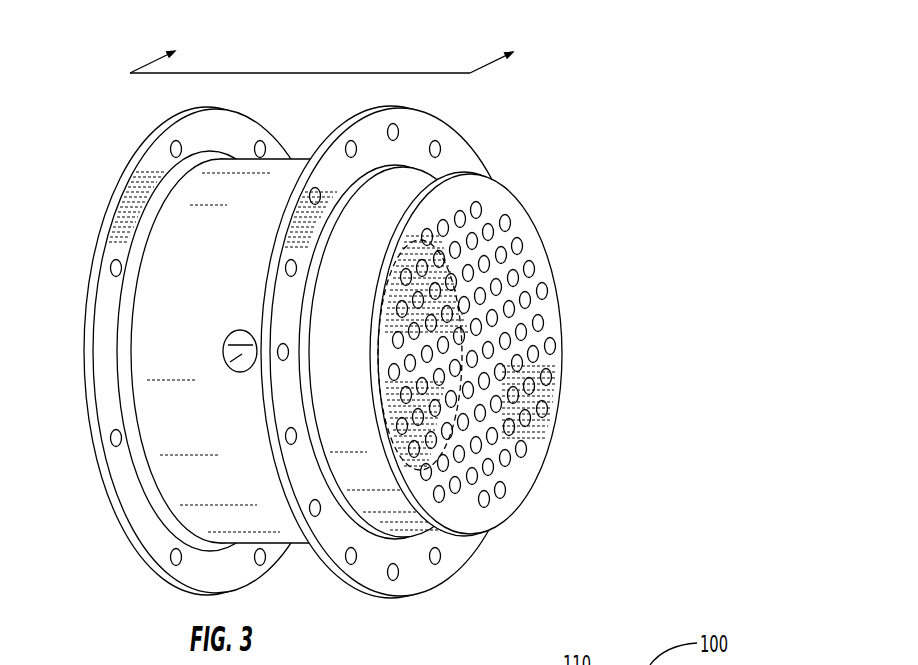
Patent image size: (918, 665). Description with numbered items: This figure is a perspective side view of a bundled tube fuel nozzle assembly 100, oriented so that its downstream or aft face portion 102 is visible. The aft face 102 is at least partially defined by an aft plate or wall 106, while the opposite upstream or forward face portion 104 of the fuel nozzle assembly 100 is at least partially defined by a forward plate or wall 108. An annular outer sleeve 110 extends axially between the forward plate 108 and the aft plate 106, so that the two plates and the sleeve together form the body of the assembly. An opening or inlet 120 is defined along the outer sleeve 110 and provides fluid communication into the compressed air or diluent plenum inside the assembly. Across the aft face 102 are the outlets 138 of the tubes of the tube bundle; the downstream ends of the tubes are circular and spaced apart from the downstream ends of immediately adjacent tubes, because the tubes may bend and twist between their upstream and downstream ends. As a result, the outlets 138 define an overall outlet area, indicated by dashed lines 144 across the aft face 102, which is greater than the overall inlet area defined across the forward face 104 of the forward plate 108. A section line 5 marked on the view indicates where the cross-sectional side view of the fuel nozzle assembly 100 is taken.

The section line 5- 5 is at (143, 66).
The fuel nozzle assembly 100 is at (321, 311).
The aft face portion 102 is at (513, 218).
The forward face portion 104 is at (94, 343).
The aft plate 106 is at (424, 182).
The forward plate 108 is at (90, 377).
The annular outer sleeve 110 is at (253, 197).
The inlet 120 is at (229, 370).
The outlets 138 is at (543, 297).
The overall outlet area 144 is at (403, 447).